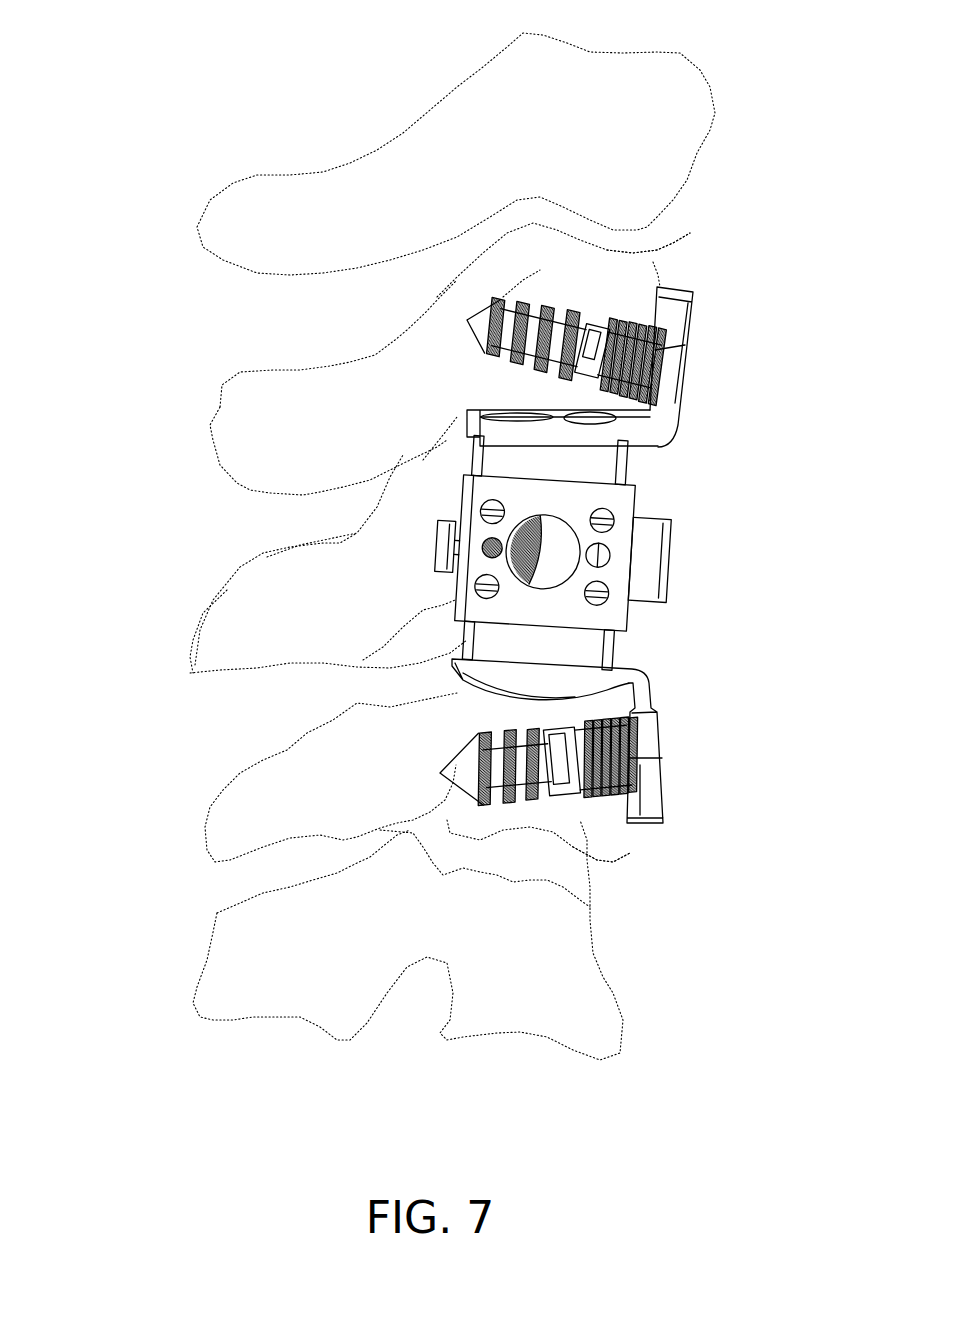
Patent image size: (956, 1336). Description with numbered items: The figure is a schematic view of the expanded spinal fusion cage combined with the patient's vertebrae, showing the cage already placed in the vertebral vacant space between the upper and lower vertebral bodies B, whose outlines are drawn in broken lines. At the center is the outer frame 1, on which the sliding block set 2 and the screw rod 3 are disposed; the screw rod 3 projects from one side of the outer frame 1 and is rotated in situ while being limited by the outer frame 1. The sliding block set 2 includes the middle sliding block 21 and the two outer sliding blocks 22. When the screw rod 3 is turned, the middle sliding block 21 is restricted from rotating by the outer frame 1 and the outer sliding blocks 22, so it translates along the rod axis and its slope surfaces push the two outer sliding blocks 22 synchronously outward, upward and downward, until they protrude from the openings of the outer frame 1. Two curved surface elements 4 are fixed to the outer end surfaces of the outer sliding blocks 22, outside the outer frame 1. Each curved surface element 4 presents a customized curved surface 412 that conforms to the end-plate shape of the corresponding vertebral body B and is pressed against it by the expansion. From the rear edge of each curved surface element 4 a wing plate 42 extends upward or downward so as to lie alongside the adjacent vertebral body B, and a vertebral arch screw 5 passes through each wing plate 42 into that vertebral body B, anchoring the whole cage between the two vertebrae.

The outer frame 1 is at (630, 623).
The sliding block set 2 is at (405, 563).
The middle sliding block 21 is at (359, 536).
The outer sliding block 22 is at (123, 687).
The screw rod 3 is at (648, 528).
The curved surface element 4 is at (568, 562).
The wing plate 42 is at (660, 362).
The customized curved surface 412 is at (503, 384).
The vertebral arch screw 5 is at (653, 316).
The vertebral body B is at (647, 260).